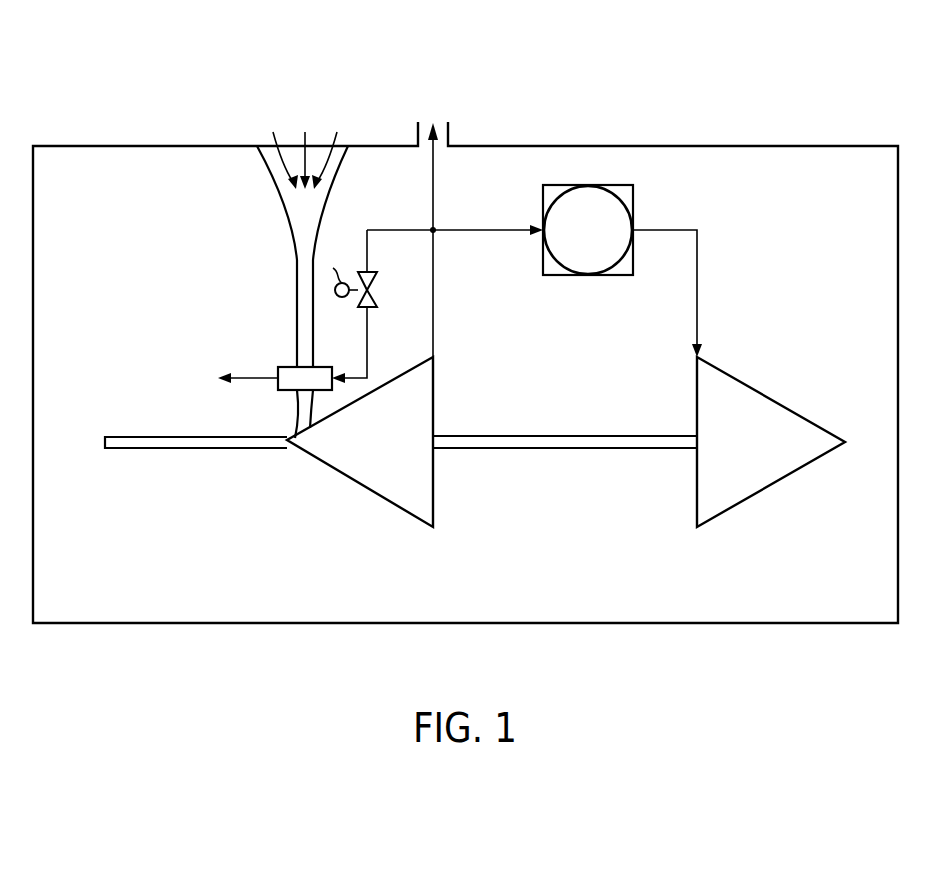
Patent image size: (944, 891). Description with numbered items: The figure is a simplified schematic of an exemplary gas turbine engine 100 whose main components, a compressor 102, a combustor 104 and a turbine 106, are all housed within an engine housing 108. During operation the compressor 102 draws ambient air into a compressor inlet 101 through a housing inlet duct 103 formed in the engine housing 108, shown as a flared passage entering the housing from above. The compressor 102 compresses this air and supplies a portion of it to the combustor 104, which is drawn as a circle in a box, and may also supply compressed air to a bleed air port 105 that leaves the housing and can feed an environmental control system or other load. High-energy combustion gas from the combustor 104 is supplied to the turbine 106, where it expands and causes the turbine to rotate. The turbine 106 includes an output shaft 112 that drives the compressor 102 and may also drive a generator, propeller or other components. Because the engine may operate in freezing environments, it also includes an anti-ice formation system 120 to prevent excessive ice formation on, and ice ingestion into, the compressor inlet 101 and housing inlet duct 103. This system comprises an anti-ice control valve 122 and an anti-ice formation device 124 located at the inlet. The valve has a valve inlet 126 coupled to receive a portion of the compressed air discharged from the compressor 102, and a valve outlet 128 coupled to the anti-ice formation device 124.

The gas turbine engine 100 is at (789, 63).
The compressor inlet 101 is at (296, 418).
The compressor 102 is at (433, 387).
The housing inlet duct 103 is at (292, 243).
The combustor 104 is at (636, 200).
The bleed air port 105 is at (425, 123).
The turbine 106 is at (768, 395).
The engine housing 108 is at (593, 146).
The output shaft 112 is at (192, 448).
The anti-ice formation system 120 is at (364, 207).
The anti-ice control valve 122 is at (365, 308).
The anti-ice formation device 124 is at (278, 368).
The valve inlet 126 is at (367, 268).
The valve outlet 128 is at (367, 332).